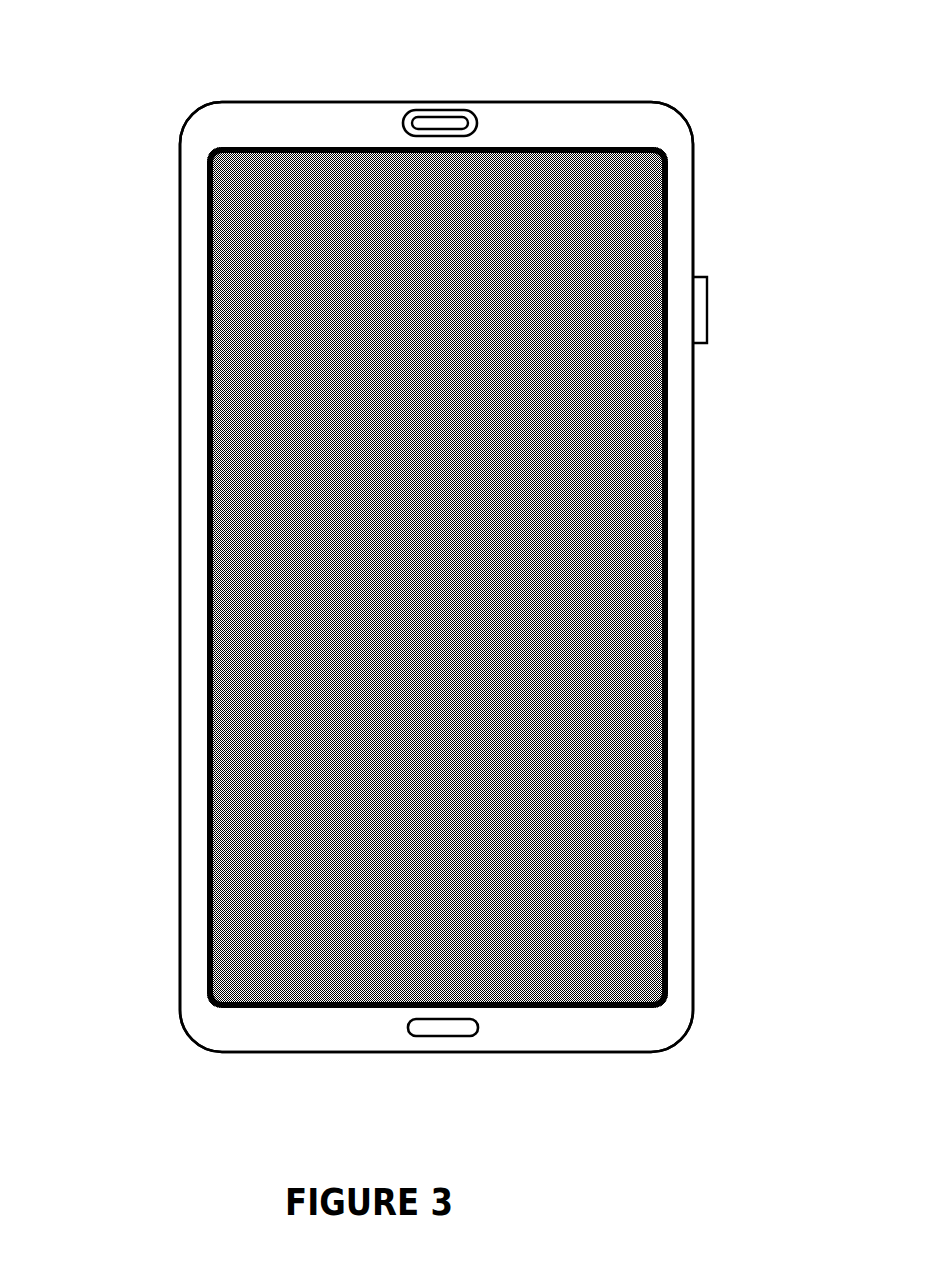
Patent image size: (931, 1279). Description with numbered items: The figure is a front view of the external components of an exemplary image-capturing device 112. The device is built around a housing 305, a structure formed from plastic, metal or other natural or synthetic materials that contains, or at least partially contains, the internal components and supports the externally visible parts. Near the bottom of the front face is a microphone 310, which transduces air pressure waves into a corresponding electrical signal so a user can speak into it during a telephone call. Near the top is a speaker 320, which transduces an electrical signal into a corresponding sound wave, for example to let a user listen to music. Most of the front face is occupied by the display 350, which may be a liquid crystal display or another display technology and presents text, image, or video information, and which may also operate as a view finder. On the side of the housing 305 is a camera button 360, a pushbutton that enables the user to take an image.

The image-capturing device 112 is at (193, 62).
The housing 305 is at (180, 506).
The microphone 310 is at (460, 1036).
The speaker 320 is at (453, 112).
The display 350 is at (650, 586).
The camera button 360 is at (700, 305).